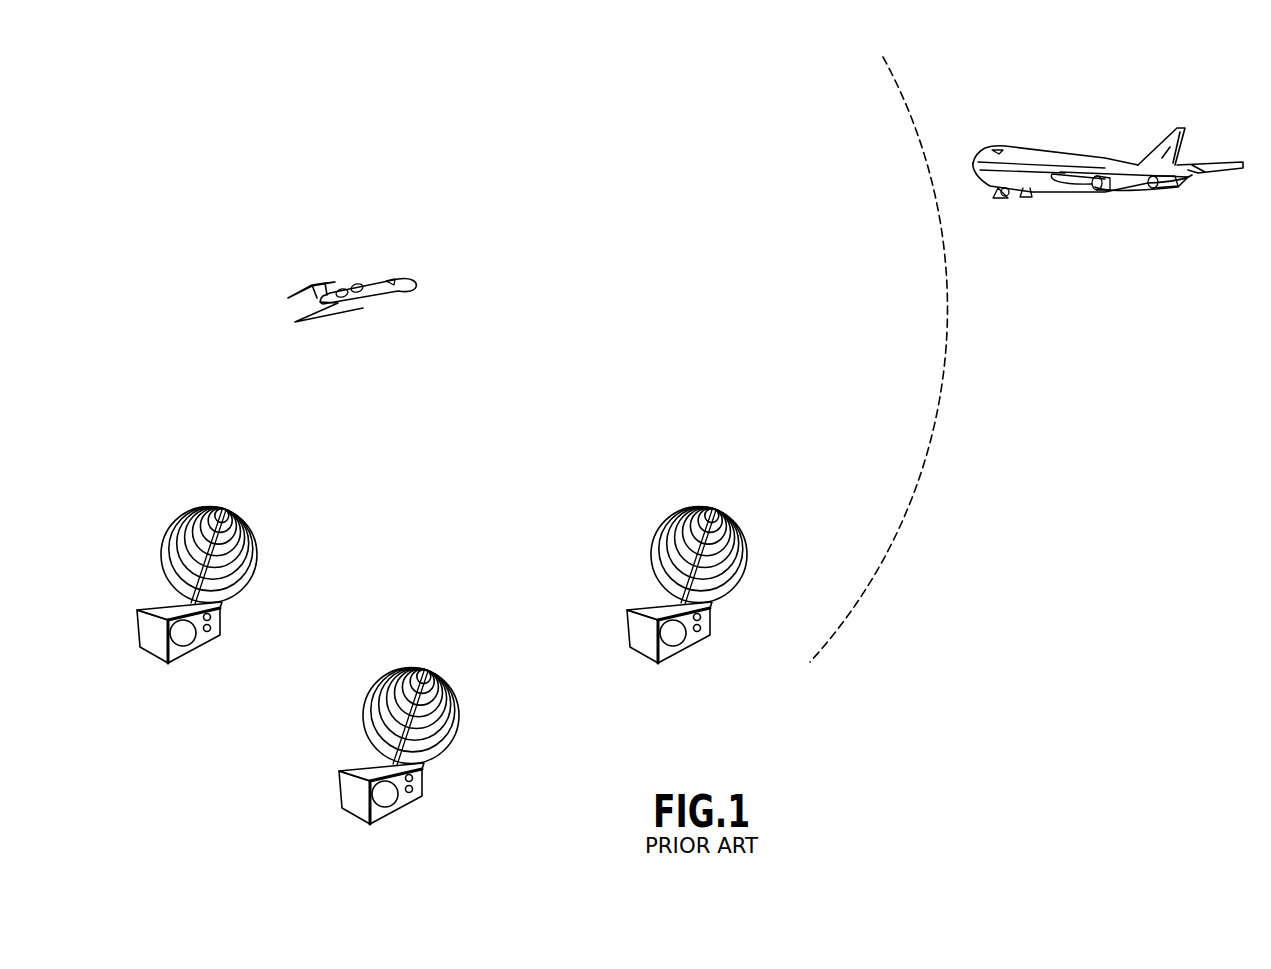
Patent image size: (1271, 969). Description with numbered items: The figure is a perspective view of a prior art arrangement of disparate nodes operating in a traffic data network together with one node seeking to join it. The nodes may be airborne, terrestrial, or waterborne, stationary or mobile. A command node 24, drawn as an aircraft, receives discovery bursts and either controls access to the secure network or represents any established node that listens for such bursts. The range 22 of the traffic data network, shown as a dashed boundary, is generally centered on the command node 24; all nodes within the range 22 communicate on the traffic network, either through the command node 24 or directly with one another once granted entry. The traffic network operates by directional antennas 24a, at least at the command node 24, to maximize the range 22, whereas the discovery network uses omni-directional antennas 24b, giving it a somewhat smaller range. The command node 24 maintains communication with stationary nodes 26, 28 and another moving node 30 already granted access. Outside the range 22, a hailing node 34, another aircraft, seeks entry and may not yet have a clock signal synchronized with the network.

The range of the traffic data network 22 is at (947, 335).
The command node 24 is at (390, 306).
The directional antennas 24a is at (413, 283).
The omni-directional antennas 24b is at (375, 316).
The stationary node 26 is at (158, 606).
The stationary node 28 is at (648, 606).
The moving node 30 is at (358, 766).
The hailing node 34 is at (1095, 206).